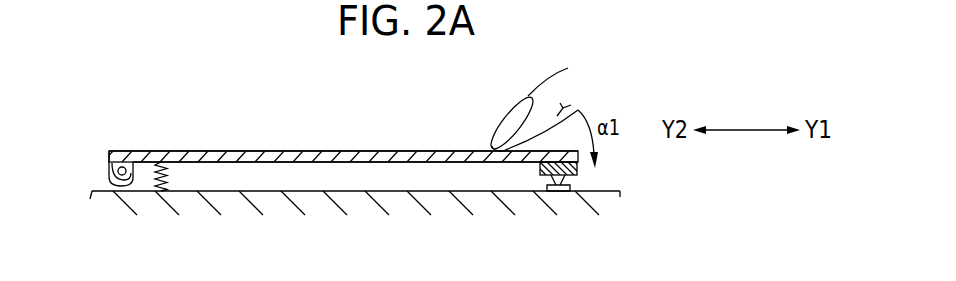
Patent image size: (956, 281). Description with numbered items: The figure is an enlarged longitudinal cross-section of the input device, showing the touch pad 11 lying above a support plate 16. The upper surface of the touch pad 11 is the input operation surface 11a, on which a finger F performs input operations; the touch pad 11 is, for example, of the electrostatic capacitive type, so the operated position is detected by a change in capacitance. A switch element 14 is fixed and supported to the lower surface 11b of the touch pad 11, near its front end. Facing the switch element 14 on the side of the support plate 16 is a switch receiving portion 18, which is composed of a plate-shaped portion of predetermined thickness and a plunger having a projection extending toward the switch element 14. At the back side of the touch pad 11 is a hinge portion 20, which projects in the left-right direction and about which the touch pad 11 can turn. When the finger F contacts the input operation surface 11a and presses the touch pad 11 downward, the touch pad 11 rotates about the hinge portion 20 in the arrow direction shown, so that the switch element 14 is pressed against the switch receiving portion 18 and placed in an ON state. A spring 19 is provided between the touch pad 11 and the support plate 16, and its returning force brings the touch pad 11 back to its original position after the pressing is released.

The touch pad 11 is at (433, 151).
The input operation surface 11a is at (288, 151).
The lower surface 11b is at (357, 162).
The switch element 14 is at (580, 176).
The support plate 16 is at (603, 205).
The switch receiving portion 18 is at (550, 185).
The spring 19 is at (167, 173).
The hinge portion 20 is at (112, 165).
The finger F is at (557, 83).